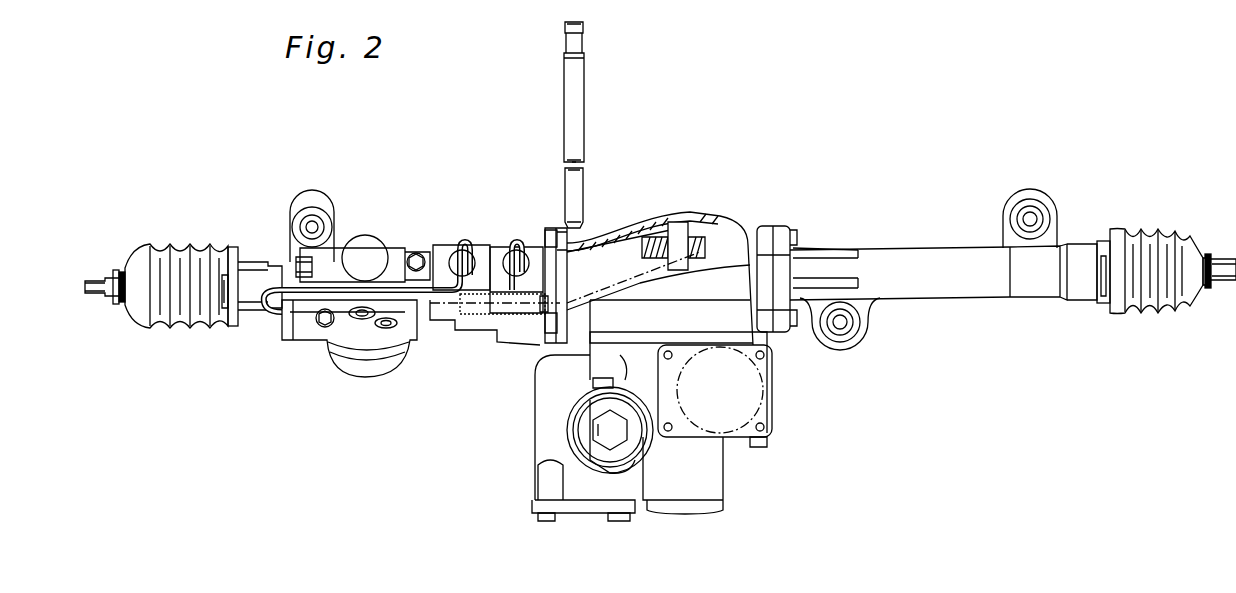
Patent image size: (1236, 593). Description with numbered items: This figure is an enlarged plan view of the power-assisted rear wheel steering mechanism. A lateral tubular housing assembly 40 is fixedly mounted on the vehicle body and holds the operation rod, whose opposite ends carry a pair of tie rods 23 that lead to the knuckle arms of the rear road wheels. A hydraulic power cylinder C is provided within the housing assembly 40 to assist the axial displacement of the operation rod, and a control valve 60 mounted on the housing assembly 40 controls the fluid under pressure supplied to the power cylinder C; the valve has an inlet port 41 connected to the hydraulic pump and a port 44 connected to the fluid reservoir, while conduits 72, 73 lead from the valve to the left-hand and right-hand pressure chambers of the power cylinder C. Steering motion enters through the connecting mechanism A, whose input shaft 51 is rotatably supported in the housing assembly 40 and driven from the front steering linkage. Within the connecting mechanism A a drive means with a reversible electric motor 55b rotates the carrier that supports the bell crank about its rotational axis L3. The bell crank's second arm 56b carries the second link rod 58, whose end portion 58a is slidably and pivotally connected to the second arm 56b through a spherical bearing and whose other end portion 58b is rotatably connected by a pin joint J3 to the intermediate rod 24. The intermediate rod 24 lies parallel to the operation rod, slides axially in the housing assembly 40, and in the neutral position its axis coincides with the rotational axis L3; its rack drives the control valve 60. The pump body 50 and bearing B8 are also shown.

The tie rods 23 is at (116, 277).
The intermediate rod 24 is at (480, 316).
The tubular housing assembly 40 is at (822, 248).
The inlet port 41 is at (387, 329).
The port 44 is at (363, 320).
The power steering pump body 50 is at (677, 462).
The input shaft 51 is at (586, 104).
The reversible electric motor 55b is at (755, 384).
The second arm 56b is at (686, 222).
The second link rod 58 is at (612, 252).
The end portion 58a is at (648, 240).
The end portion 58b is at (527, 268).
The control valve 60 is at (330, 352).
The conduit 72 is at (441, 252).
The conduit 73 is at (424, 300).
The connecting mechanism A is at (520, 430).
The bolt B8 is at (706, 232).
The hydraulic power cylinder C is at (479, 262).
The pin joint J3 is at (522, 318).
The rotational axis L3 is at (580, 301).